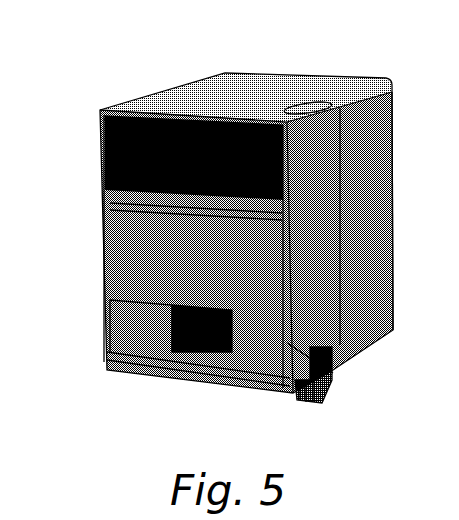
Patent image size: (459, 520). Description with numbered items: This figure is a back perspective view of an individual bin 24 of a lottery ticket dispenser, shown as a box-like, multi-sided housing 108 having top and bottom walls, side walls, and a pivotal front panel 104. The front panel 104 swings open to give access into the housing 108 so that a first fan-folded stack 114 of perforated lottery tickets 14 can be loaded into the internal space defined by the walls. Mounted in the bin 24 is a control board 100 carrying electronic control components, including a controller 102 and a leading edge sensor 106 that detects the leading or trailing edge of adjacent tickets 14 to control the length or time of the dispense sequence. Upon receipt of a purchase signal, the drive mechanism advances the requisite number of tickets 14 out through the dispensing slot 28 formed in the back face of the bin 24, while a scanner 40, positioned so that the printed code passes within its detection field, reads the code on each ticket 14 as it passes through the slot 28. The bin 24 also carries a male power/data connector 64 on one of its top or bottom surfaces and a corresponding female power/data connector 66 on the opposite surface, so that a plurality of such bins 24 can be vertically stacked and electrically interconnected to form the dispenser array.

The lottery tickets 14 is at (123, 257).
The bin 24 is at (275, 90).
The dispensing slot 28 is at (120, 208).
The scanner 40 is at (197, 342).
The male power/data connector 64 is at (320, 398).
The female power/data connector 66 is at (313, 110).
The control board 100 is at (143, 158).
The controller 102 is at (257, 187).
The front panel 104 is at (128, 115).
The sensor 106 is at (157, 172).
The housing 108 is at (392, 258).
The fan-folded stack of tickets 114 is at (343, 170).